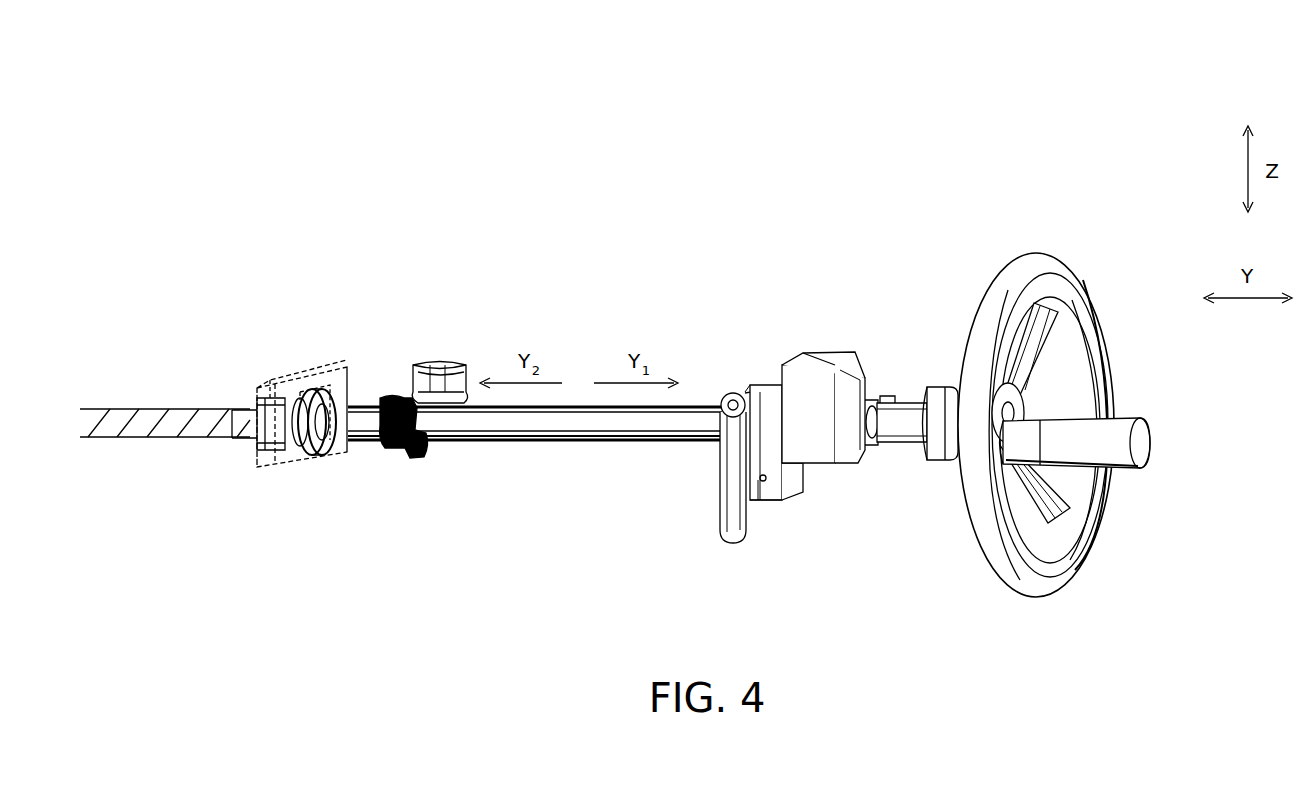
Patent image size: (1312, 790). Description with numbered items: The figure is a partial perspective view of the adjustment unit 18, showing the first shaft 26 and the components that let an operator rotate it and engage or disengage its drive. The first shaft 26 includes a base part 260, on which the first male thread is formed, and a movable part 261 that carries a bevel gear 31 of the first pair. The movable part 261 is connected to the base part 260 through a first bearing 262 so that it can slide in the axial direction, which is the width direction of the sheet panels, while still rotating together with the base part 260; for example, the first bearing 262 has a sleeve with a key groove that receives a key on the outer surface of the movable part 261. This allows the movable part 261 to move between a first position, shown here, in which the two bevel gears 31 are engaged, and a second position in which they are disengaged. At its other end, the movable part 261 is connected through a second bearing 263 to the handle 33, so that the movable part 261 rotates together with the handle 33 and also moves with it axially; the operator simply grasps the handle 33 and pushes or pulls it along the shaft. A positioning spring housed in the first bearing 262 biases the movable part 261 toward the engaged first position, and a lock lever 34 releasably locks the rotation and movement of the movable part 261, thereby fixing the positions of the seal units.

The adjustment unit 18 is at (913, 128).
The first shaft 26 is at (580, 447).
The base part 260 is at (163, 438).
The movable part 261 is at (493, 441).
The first bearing 262 is at (303, 372).
The second bearing 263 is at (862, 362).
The bevel gear of the first pair 31 is at (463, 360).
The handle 33 is at (1038, 255).
The lock lever 34 is at (732, 540).